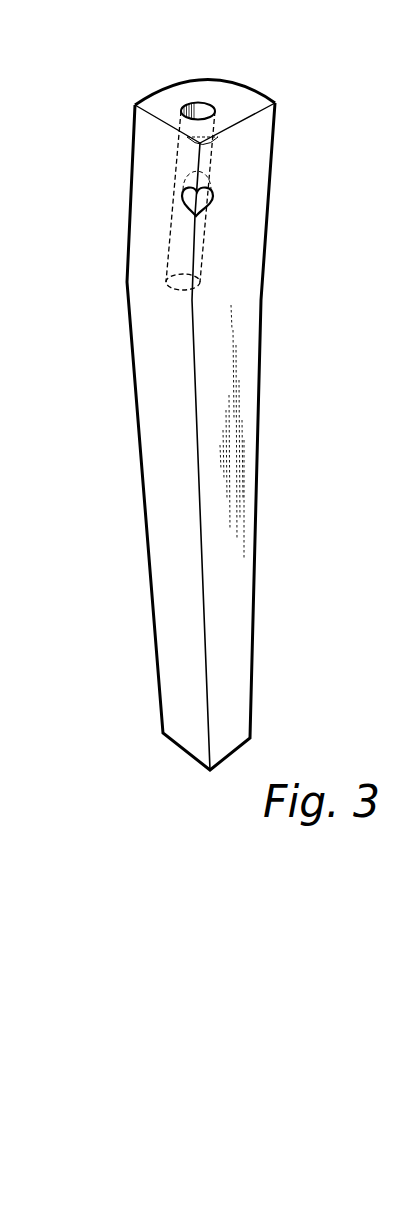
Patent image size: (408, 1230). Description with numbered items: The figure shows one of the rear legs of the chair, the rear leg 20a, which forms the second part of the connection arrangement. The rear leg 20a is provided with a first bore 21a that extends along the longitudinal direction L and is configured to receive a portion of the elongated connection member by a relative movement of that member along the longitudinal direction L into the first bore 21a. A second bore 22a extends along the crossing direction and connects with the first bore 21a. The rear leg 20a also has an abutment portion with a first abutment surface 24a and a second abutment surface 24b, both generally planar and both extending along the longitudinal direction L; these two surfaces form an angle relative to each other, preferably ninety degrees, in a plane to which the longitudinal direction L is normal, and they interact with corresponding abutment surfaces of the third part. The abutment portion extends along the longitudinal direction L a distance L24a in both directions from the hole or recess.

The rear leg 20a is at (252, 592).
The first bore 21a is at (175, 148).
The second bore 22a is at (212, 198).
The first abutment surface 24a is at (163, 160).
The second abutment surface 24b is at (243, 158).
The abutment portion extension distance L24a is at (188, 193).
The longitudinal direction L is at (198, 190).